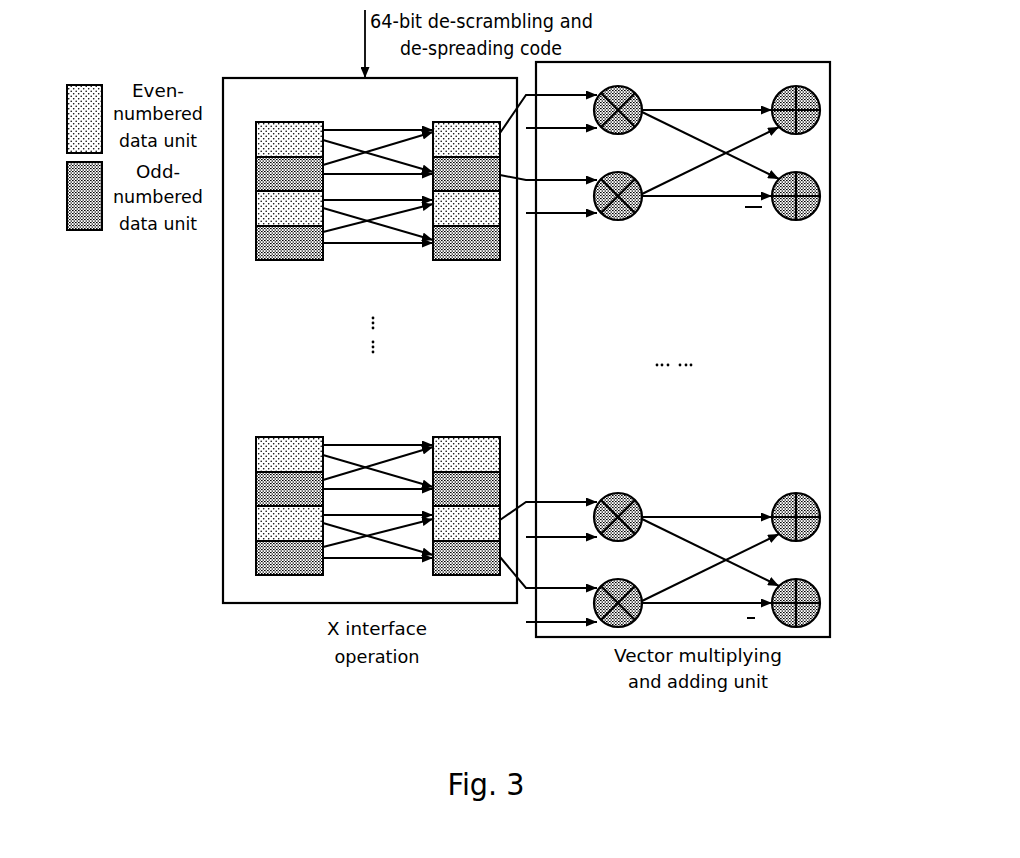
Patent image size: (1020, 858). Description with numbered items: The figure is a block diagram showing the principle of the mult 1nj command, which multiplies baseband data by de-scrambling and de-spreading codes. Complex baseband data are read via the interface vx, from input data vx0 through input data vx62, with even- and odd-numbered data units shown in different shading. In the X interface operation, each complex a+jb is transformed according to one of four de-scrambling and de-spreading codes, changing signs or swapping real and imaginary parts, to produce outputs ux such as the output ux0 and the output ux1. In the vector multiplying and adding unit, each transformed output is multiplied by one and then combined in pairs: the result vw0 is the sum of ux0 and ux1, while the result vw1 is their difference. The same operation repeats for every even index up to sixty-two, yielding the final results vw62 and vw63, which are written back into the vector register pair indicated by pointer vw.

The input data vx vx0 is at (365, 186).
The input data vx vx62 is at (365, 495).
The output ux ux0 is at (571, 303).
The output ux ux1 is at (571, 387).
The result vw vw0 is at (820, 110).
The result vw vw1 is at (820, 196).
The result vw vw62 is at (820, 517).
The result vw vw63 is at (820, 603).